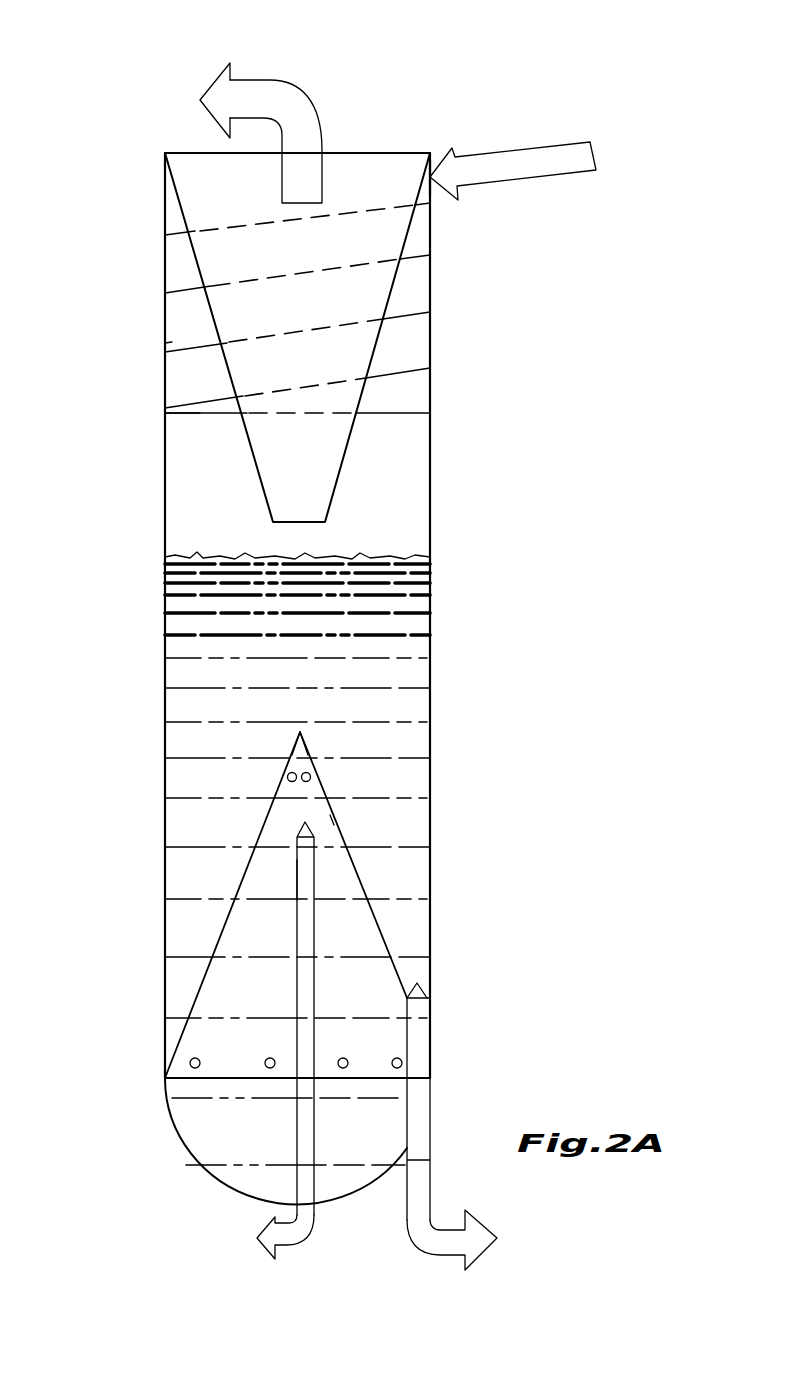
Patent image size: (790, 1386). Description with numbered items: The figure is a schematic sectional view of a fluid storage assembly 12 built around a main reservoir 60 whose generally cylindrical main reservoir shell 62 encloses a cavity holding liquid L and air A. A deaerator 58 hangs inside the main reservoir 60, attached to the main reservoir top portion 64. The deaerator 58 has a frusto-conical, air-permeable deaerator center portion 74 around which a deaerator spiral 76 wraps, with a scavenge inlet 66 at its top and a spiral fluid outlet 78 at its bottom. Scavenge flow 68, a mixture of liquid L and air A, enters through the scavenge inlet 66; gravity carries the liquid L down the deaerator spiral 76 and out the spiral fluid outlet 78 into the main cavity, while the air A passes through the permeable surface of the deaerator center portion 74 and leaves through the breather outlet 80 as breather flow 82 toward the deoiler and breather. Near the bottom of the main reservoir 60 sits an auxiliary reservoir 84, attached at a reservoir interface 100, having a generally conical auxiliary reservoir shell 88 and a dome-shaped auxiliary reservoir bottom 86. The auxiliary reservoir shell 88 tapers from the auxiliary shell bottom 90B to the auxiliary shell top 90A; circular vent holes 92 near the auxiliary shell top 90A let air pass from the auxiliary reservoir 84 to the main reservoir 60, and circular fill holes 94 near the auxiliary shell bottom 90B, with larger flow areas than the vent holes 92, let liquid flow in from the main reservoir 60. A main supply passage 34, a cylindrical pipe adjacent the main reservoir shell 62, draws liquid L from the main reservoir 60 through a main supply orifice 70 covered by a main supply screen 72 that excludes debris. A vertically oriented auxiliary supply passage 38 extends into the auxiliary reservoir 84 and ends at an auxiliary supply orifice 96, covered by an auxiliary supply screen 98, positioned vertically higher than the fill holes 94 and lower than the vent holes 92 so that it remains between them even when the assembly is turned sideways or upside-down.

The fluid storage assembly 12 is at (410, 86).
The main supply passage 34 is at (420, 1068).
The auxiliary supply passage 38 is at (300, 881).
The deaerator 58 is at (180, 206).
The main reservoir 60 is at (165, 535).
The main reservoir shell 62 is at (430, 437).
The main reservoir top portion 64 is at (165, 153).
The scavenge inlet 66 is at (430, 172).
The scavenge flow 68 is at (522, 165).
The main supply orifice 70 is at (425, 997).
The main supply screen 72 is at (420, 982).
The deaerator center portion 74 is at (217, 262).
The deaerator spiral 76 is at (175, 345).
The spiral fluid outlet 78 is at (192, 418).
The breather outlet 80 is at (323, 150).
The breather flow 82 is at (277, 103).
The auxiliary reservoir 84 is at (281, 773).
The auxiliary reservoir bottom 86 is at (202, 1162).
The auxiliary reservoir shell 88 is at (267, 820).
The auxiliary shell top 90A is at (298, 733).
The auxiliary shell bottom 90B is at (219, 1081).
The vent holes 92 is at (318, 770).
The fill holes 94 is at (397, 1058).
The auxiliary supply orifice 96 is at (310, 832).
The auxiliary supply screen 98 is at (330, 815).
The reservoir interface 100 is at (165, 1079).
The air A is at (383, 503).
The liquid L is at (372, 623).